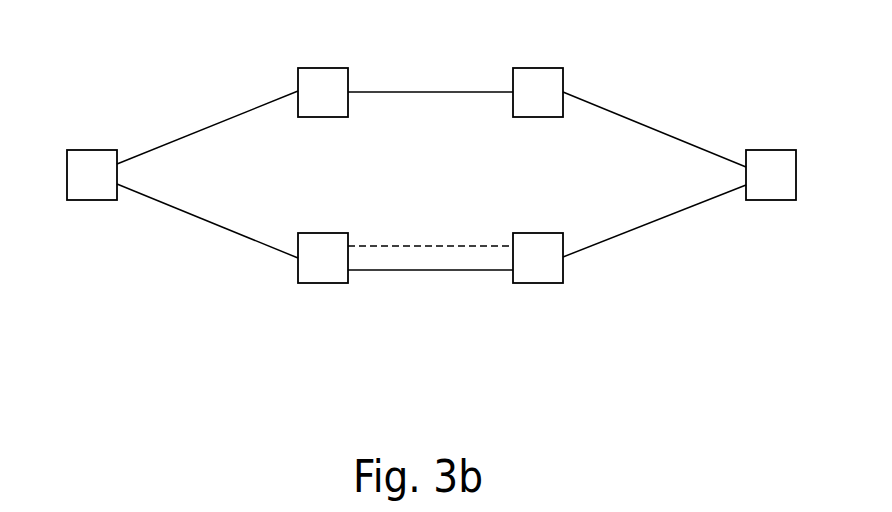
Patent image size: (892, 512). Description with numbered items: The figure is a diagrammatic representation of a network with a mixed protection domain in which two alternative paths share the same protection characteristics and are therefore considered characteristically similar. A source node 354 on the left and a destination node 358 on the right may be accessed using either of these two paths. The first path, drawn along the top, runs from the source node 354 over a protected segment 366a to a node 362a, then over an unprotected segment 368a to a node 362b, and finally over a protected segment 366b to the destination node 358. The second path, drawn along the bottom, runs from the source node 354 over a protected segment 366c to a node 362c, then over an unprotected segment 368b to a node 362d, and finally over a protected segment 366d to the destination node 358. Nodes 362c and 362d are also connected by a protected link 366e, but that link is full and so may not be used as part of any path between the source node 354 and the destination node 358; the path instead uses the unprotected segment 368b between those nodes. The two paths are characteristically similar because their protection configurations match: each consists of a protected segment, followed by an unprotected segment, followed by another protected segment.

The source node 354 is at (100, 150).
The destination node 358 is at (770, 150).
The node 362a is at (323, 68).
The node 362b is at (538, 68).
The node 362c is at (323, 233).
The node 362d is at (538, 233).
The protected segment 366a is at (227, 120).
The protected segment 366b is at (613, 110).
The protected segment 366c is at (250, 242).
The protected segment 366d is at (588, 248).
The protected link 366e is at (480, 270).
The unprotected segment 368a is at (480, 93).
The unprotected segment 368b is at (497, 246).